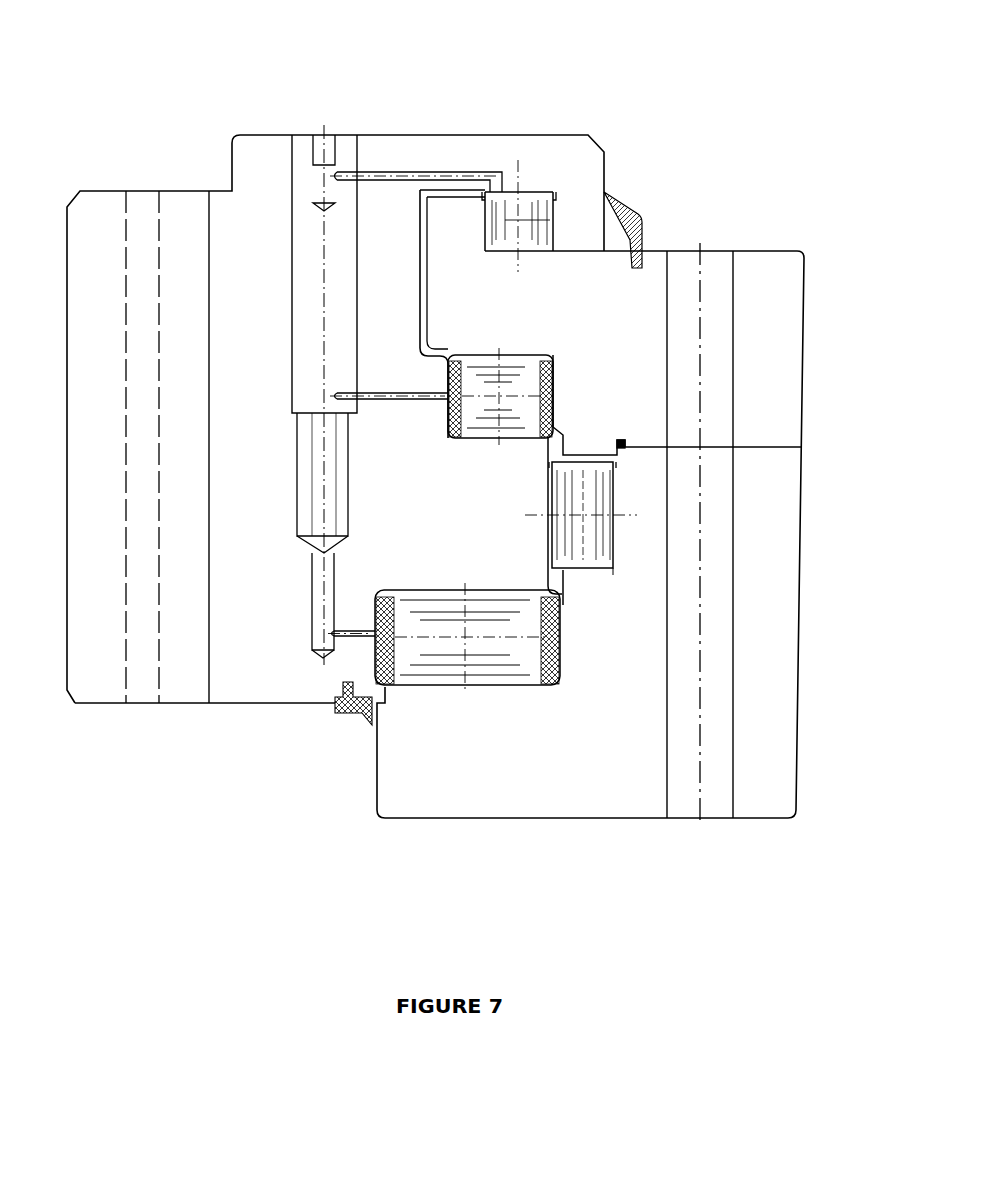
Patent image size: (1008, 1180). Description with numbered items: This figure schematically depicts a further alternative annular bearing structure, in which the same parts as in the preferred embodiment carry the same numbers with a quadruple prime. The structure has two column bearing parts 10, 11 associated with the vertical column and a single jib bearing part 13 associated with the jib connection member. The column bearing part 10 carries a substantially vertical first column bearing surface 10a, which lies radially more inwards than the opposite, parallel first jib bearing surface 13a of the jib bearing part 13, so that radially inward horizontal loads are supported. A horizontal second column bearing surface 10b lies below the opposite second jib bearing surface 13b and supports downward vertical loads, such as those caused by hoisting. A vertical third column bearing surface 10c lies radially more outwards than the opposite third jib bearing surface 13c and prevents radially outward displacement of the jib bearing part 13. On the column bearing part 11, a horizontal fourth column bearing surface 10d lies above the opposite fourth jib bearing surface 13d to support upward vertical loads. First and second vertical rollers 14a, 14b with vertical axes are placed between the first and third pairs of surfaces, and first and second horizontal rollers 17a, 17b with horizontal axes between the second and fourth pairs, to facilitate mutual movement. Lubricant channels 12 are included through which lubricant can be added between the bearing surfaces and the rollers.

The column bearing part 10 is at (798, 558).
The first column bearing surface 10a is at (613, 540).
The second column bearing surface 10b is at (498, 687).
The third column bearing surface 10c is at (476, 200).
The fourth column bearing surface 10d is at (521, 362).
The column bearing part 11 is at (749, 252).
The lubricant channel 12 is at (387, 220).
The jib bearing part 13 is at (250, 703).
The first jib bearing surface 13a is at (548, 517).
The second jib bearing surface 13b is at (440, 590).
The third jib bearing surface 13c is at (562, 221).
The fourth jib bearing surface 13d is at (478, 440).
The first vertical roller 14a is at (586, 480).
The second vertical roller 14b is at (525, 200).
The first horizontal roller 17a is at (420, 668).
The second horizontal roller 17b is at (528, 367).